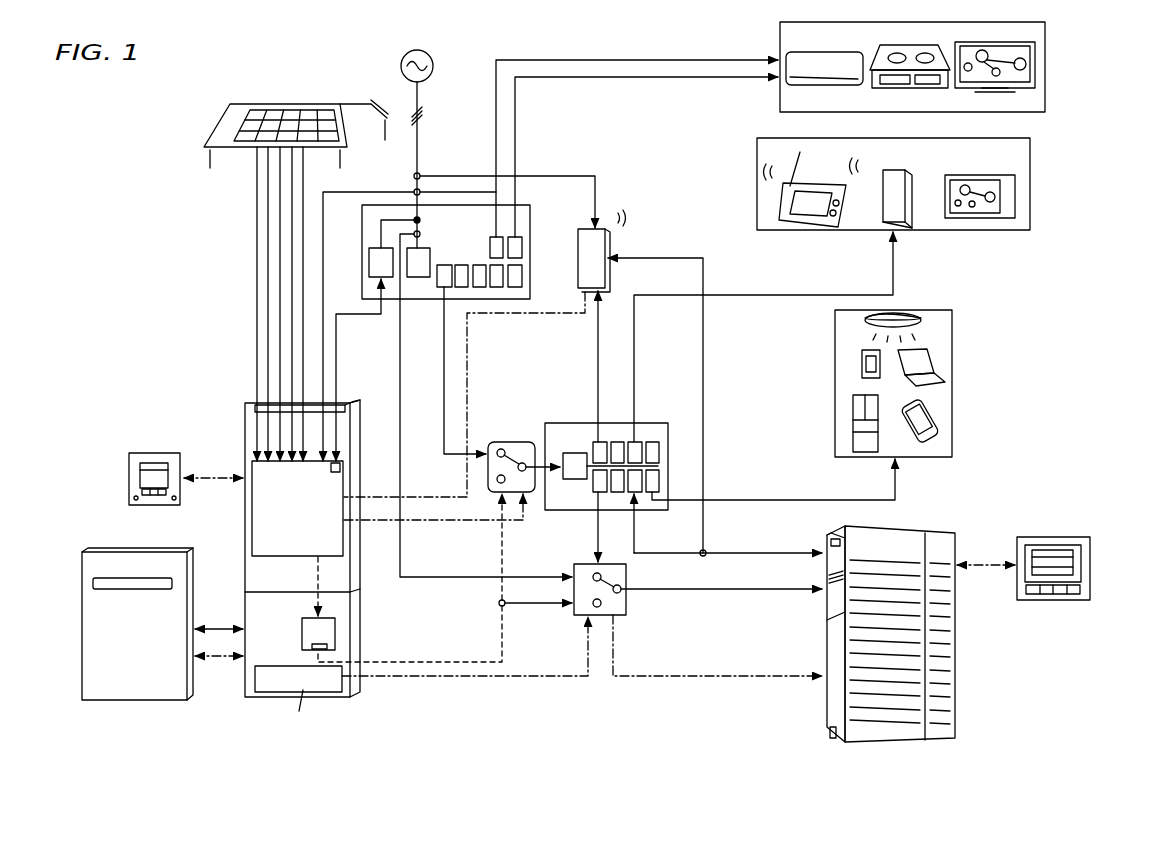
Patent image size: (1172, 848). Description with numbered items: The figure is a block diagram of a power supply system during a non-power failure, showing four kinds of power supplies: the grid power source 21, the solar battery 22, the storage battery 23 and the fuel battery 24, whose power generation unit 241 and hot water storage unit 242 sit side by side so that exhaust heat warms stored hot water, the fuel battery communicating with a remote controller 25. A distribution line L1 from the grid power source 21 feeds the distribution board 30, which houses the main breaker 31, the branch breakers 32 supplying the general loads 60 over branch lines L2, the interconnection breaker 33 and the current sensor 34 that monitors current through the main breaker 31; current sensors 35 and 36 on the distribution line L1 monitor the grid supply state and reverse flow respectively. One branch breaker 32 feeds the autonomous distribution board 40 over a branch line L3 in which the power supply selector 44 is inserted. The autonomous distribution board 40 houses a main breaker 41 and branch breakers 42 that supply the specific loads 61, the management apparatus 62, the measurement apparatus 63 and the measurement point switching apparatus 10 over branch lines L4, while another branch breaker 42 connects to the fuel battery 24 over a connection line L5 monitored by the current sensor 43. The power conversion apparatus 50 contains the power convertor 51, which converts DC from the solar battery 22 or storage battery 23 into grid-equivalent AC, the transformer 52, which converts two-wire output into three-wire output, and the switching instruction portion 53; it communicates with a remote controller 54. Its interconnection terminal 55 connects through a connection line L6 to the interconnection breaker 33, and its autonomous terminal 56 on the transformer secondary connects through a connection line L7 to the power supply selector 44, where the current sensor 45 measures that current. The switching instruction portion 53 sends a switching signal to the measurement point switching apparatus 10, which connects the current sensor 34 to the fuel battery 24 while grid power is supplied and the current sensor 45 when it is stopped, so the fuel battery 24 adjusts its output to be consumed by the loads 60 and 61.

The measurement point switching apparatus 10 is at (580, 616).
The grid power source 21 is at (400, 60).
The solar battery 22 is at (293, 107).
The storage battery 23 is at (103, 548).
The fuel battery 24 is at (957, 660).
The power generation unit 241 is at (943, 733).
The hot water storage unit 242 is at (873, 734).
The remote controller 25 is at (1090, 551).
The distribution board 30 is at (365, 221).
The main breaker 31 is at (414, 278).
The branch breakers 32 is at (523, 243).
The interconnection breaker 33 is at (369, 255).
The current sensor 34 is at (421, 234).
The current sensor 35 is at (413, 174).
The current sensor 36 is at (421, 192).
The autonomous distribution board 40 is at (555, 428).
The main breaker 41 is at (573, 452).
The branch breakers 42 is at (603, 442).
The current sensor 43 is at (707, 551).
The power supply selector 44 is at (512, 442).
The current sensor 45 is at (505, 607).
The power conversion apparatus 50 is at (243, 428).
The power convertor 51 is at (258, 535).
The transformer 52 is at (330, 625).
The switching instruction portion 53 is at (278, 672).
The remote controller 54 is at (138, 451).
The interconnection terminal 55 is at (341, 467).
The autonomous terminal 56 is at (328, 647).
The loads 60 is at (1038, 35).
The loads 61 is at (945, 326).
The management apparatus 62 is at (1022, 152).
The measurement apparatus 63 is at (609, 228).
The distribution line L1 is at (420, 97).
The branch lines L2 is at (634, 58).
The branch line L3 is at (443, 357).
The branch lines L4 is at (596, 327).
The connection line L5 is at (782, 552).
The connection line L6 is at (357, 316).
The connection line L7 is at (461, 658).